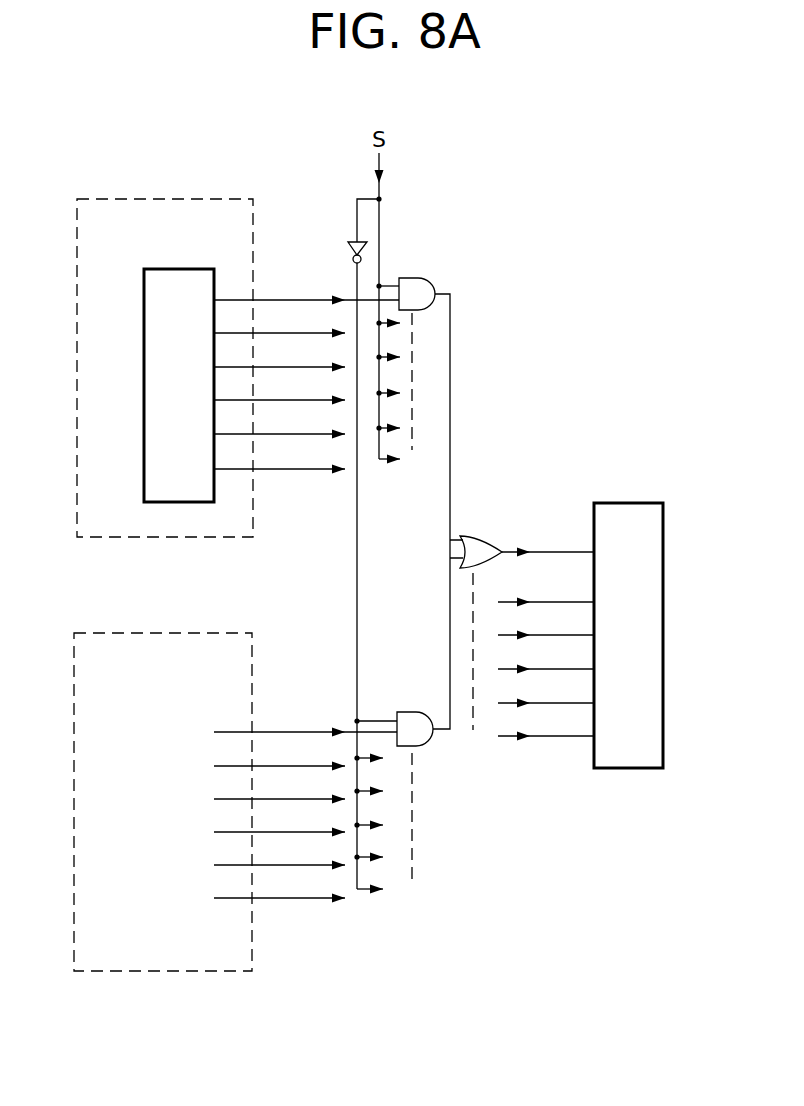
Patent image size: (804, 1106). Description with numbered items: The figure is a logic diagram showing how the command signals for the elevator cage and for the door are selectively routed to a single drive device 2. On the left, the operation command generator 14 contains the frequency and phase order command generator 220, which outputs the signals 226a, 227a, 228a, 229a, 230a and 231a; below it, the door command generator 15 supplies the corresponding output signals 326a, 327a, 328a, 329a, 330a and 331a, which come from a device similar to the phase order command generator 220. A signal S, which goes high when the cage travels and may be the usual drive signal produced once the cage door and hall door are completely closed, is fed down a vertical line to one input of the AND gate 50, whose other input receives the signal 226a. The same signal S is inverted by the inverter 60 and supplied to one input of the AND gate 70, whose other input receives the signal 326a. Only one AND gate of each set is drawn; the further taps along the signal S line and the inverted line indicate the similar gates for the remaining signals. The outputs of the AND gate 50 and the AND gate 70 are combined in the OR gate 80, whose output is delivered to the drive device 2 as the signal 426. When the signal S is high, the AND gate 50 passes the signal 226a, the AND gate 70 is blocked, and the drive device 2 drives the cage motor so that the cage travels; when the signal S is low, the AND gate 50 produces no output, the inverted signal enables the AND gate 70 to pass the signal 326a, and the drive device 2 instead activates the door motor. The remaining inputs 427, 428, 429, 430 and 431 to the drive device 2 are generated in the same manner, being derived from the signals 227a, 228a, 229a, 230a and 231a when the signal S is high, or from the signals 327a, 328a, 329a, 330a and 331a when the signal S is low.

The operation command generator 14 is at (162, 199).
The frequency and phase order command generator 220 is at (178, 269).
The door command generator 15 is at (160, 633).
The drive device 2 is at (628, 503).
The AND gate 50 is at (410, 278).
The inverter 60 is at (348, 248).
The AND gate 70 is at (407, 712).
The OR gate 80 is at (472, 536).
The output signal 226a is at (306, 290).
The output signal 227a is at (279, 323).
The output signal 228a is at (279, 357).
The output signal 229a is at (279, 390).
The output signal 230a is at (279, 424).
The output signal 231a is at (279, 459).
The output signal 326a is at (305, 722).
The output signal 327a is at (279, 756).
The output signal 328a is at (279, 789).
The output signal 329a is at (279, 822).
The output signal 330a is at (279, 855).
The output signal 331a is at (279, 888).
The signal 426 is at (548, 542).
The input signal 427 is at (546, 592).
The input signal 428 is at (546, 625).
The input signal 429 is at (546, 659).
The input signal 430 is at (546, 693).
The input signal 431 is at (546, 726).